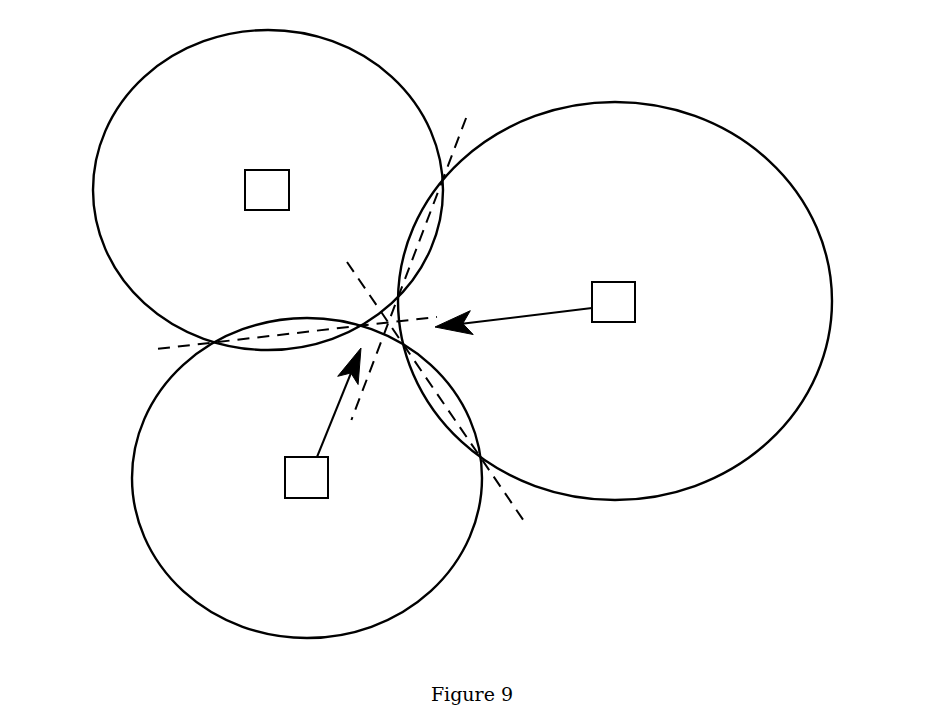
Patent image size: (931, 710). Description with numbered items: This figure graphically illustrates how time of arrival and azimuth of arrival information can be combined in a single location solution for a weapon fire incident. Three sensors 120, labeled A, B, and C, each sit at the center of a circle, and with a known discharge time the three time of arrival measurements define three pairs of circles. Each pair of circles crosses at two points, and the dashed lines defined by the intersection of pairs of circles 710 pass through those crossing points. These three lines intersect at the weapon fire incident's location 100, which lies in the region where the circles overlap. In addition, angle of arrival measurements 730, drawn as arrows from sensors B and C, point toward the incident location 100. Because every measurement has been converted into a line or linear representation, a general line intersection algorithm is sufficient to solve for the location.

The sensors 120 is at (462, 334).
The weapon fire incident location 100 is at (270, 297).
The lines defined by the intersection of pairs of circles 710 is at (316, 308).
The angle of arrival measurements 730 is at (426, 363).